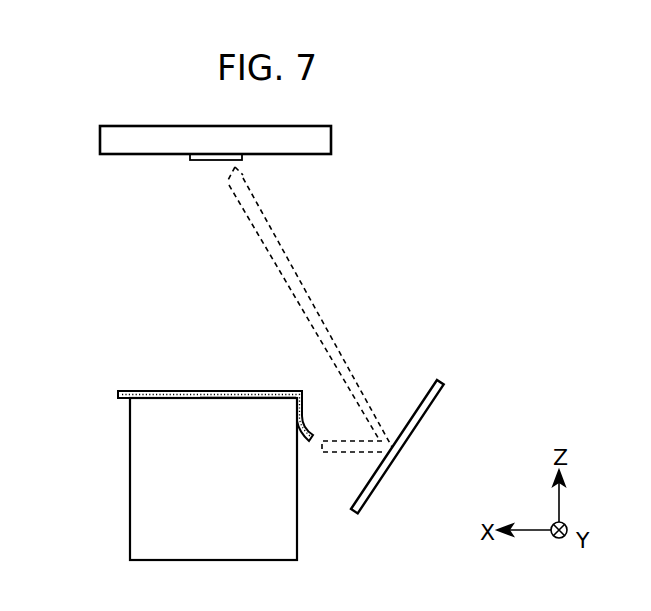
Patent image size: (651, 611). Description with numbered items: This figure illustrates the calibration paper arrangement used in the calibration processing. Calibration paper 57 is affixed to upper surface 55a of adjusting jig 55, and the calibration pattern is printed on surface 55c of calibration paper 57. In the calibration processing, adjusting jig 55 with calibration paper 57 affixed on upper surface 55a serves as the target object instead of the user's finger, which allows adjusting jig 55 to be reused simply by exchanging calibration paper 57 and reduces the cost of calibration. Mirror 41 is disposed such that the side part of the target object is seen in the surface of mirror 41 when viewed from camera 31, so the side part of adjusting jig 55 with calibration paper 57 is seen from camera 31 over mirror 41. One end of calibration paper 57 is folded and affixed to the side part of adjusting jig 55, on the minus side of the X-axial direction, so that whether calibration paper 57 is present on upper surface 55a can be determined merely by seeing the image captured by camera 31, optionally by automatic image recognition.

The camera 31 is at (100, 143).
The mirror 41 is at (425, 393).
The adjusting jig 55 is at (130, 538).
The upper surface 55a is at (243, 396).
The surface 55c is at (191, 390).
The calibration paper 57 is at (118, 394).